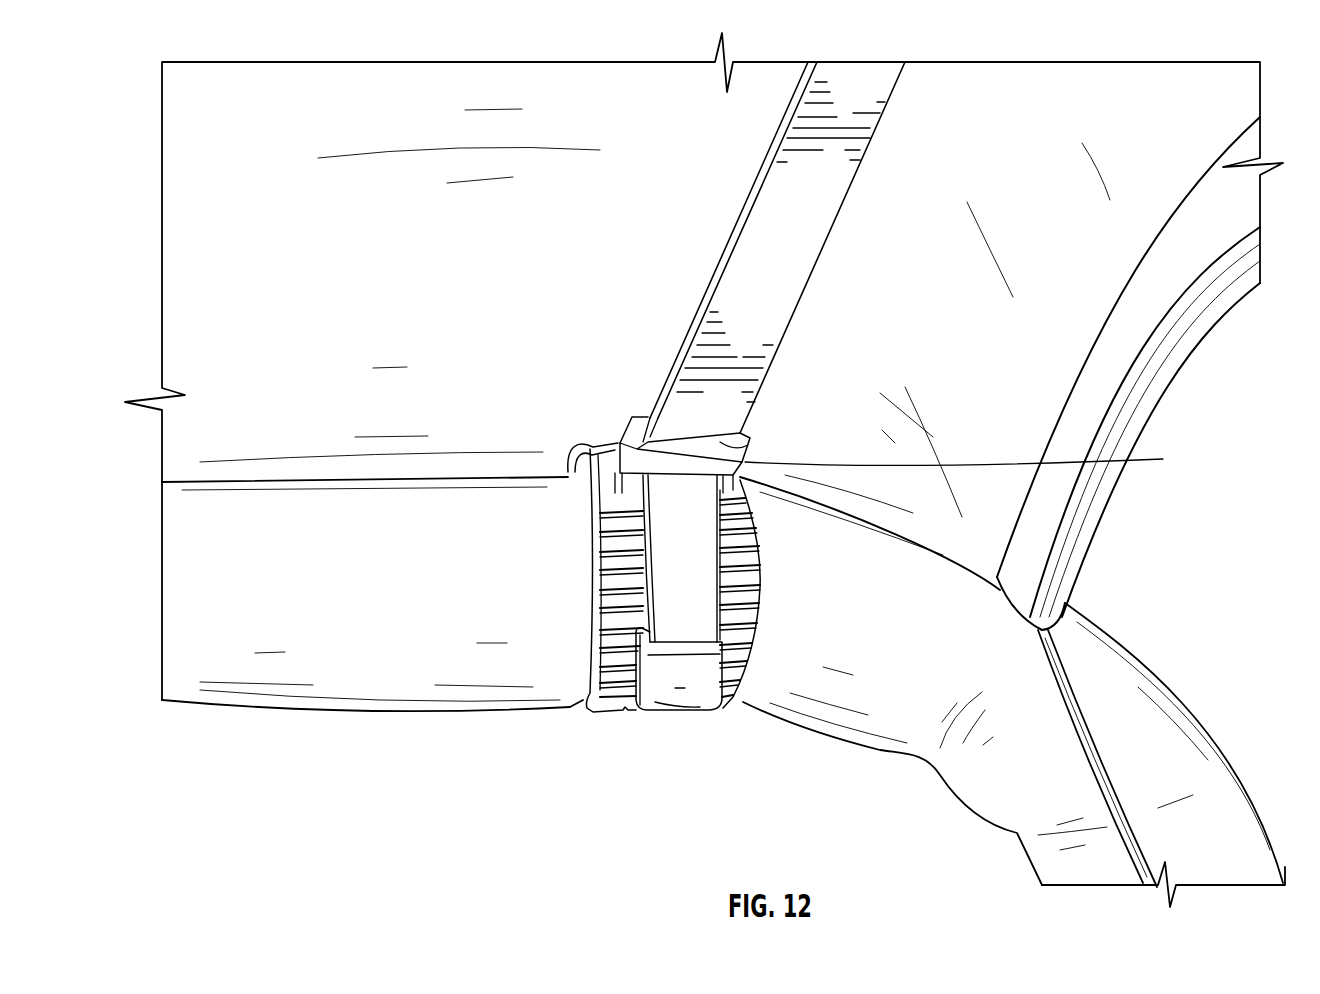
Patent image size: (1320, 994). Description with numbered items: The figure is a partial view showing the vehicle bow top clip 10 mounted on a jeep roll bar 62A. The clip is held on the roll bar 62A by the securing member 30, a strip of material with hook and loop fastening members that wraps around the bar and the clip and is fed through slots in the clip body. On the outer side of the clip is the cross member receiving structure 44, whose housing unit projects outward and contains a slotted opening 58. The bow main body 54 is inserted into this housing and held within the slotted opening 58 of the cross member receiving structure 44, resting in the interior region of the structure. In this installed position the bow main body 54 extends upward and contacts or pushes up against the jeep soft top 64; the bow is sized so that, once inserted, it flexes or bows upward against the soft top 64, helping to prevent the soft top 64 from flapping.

The vehicle bow top clip 10 is at (612, 687).
The securing member 30 is at (683, 693).
The cross member receiving structure 44 is at (640, 460).
The bow main body 54 is at (873, 72).
The slotted opening 58 is at (966, 457).
The jeep roll bar 62A is at (522, 693).
The jeep soft top 64 is at (992, 93).